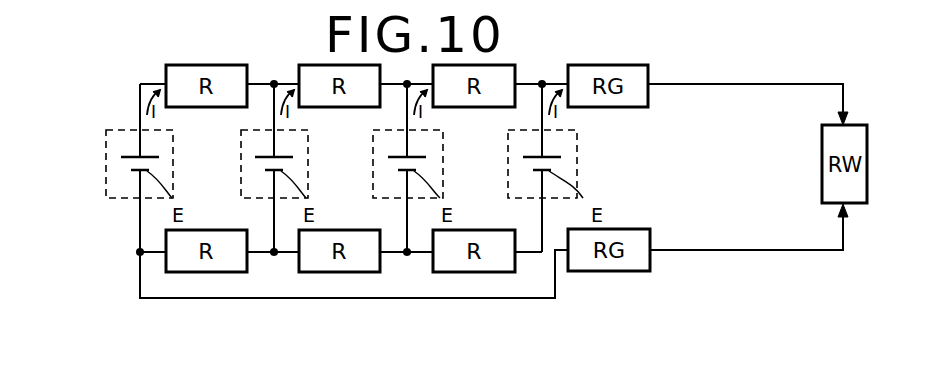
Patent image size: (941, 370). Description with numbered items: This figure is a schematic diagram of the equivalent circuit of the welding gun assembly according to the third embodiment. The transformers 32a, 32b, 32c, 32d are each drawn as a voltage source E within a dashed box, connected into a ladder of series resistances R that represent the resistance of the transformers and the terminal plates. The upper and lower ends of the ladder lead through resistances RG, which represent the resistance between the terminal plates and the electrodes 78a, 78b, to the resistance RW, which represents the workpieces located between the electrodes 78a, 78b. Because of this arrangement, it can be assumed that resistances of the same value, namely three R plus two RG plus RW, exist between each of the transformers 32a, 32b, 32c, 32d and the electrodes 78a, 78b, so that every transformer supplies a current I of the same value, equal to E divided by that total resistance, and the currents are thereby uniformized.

The transformer 32a is at (590, 160).
The transformer 32b is at (447, 165).
The transformer 32c is at (311, 162).
The transformer 32d is at (177, 162).
The electrode 78a is at (847, 102).
The electrode 78b is at (845, 237).